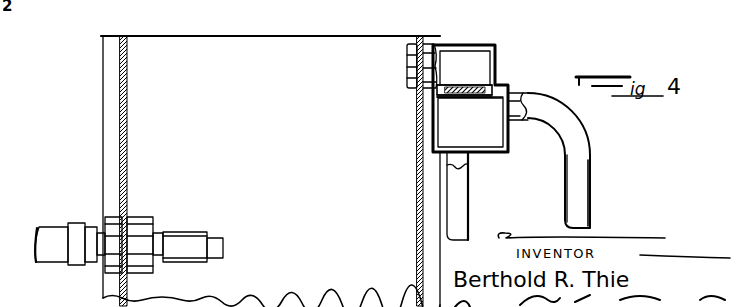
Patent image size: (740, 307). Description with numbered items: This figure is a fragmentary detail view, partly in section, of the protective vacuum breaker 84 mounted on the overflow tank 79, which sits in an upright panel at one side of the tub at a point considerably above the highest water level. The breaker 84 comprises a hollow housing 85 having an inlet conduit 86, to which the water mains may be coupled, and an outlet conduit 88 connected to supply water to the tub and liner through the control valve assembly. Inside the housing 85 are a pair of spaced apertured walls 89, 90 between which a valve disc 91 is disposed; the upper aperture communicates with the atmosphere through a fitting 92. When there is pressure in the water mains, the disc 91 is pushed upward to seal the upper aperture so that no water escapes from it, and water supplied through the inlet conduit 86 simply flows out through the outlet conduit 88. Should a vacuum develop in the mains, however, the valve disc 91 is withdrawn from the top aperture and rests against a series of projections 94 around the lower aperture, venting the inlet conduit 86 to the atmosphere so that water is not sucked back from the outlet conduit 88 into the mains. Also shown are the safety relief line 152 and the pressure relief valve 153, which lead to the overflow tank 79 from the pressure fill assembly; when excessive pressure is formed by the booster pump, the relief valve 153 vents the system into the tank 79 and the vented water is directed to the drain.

The overflow tank 79 is at (129, 41).
The vacuum breaker 84 is at (515, 76).
The hollow housing 85 is at (508, 143).
The inlet conduit 86 is at (468, 202).
The outlet conduit 88 is at (588, 188).
The apertured wall 89 is at (488, 100).
The apertured wall 90 is at (486, 86).
The valve disc 91 is at (465, 86).
The fitting 92 is at (407, 86).
The projections 94 is at (460, 96).
The safety relief line 152 is at (50, 231).
The pressure relief valve 153 is at (189, 236).